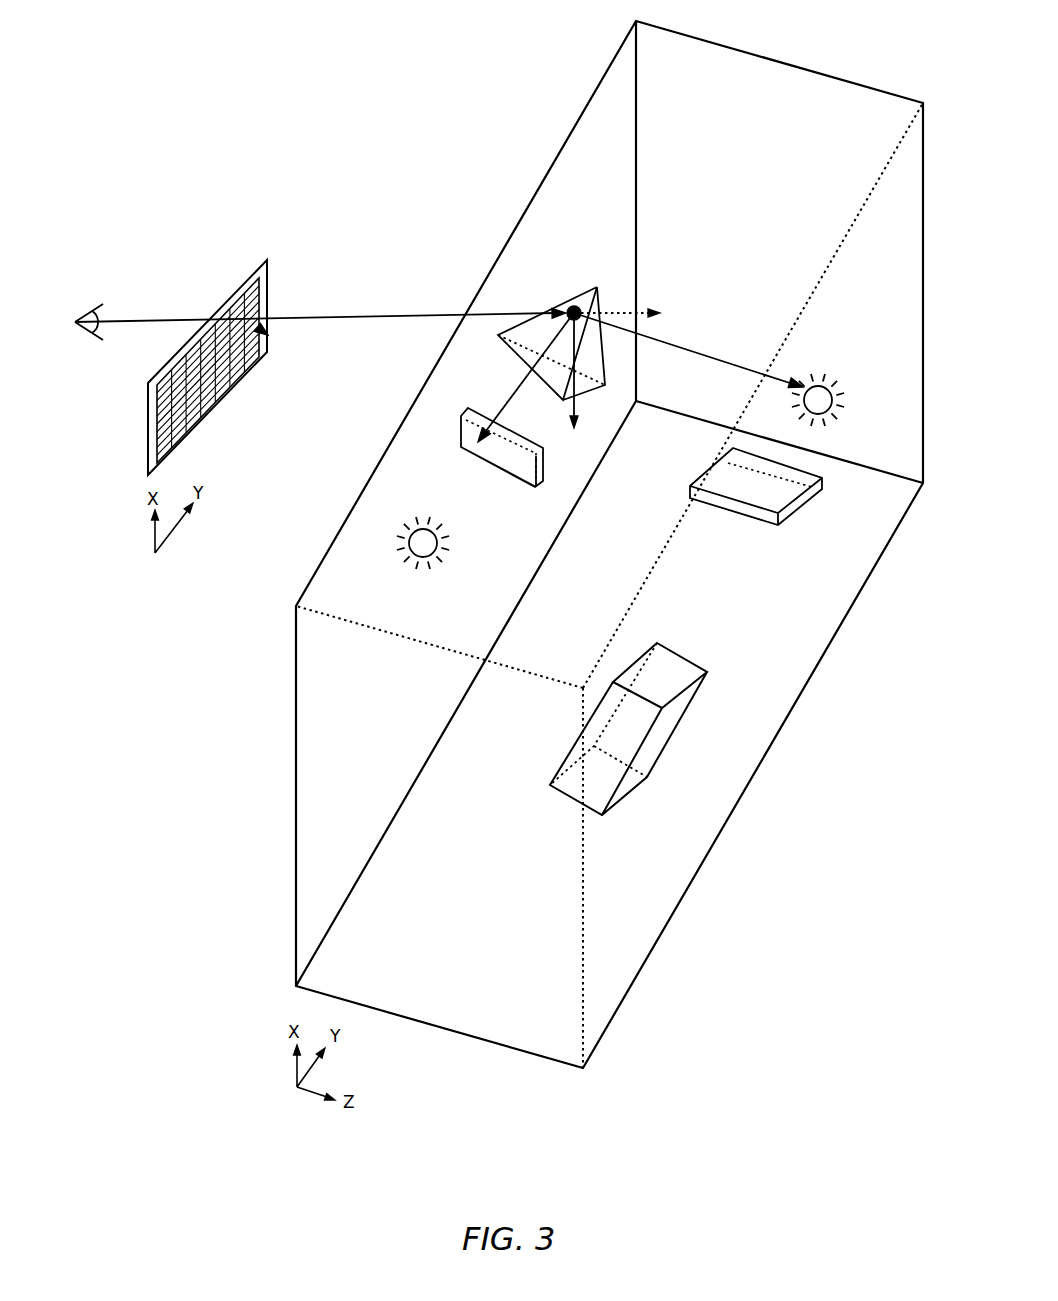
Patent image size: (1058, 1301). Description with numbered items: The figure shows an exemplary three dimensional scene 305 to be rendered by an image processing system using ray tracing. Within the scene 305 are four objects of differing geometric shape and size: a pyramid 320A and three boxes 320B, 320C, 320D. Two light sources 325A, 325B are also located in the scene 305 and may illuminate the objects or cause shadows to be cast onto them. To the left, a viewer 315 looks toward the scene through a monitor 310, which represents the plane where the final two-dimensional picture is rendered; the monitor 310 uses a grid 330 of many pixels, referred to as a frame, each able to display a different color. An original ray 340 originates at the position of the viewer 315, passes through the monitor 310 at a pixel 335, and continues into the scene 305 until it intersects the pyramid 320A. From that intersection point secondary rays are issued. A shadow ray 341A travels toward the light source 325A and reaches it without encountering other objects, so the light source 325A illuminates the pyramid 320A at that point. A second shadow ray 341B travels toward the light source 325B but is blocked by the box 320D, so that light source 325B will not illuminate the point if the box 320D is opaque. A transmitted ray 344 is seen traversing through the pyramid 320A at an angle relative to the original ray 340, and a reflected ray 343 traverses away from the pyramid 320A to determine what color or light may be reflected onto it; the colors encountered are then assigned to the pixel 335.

The three dimensional scene 305 is at (543, 1090).
The monitor 310 is at (201, 367).
The viewer 315 is at (84, 310).
The pyramid object 320A is at (590, 292).
The box object 320B is at (742, 520).
The box object 320C is at (550, 786).
The box object 320D is at (497, 473).
The light source 325A is at (828, 384).
The light source 325B is at (405, 552).
The grid of pixels 330 is at (150, 443).
The pixel 335 is at (266, 337).
The original ray 340 is at (392, 318).
The shadow ray 341A is at (680, 345).
The shadow ray 341B is at (512, 378).
The reflected ray 343 is at (582, 418).
The transmitted ray 344 is at (642, 314).